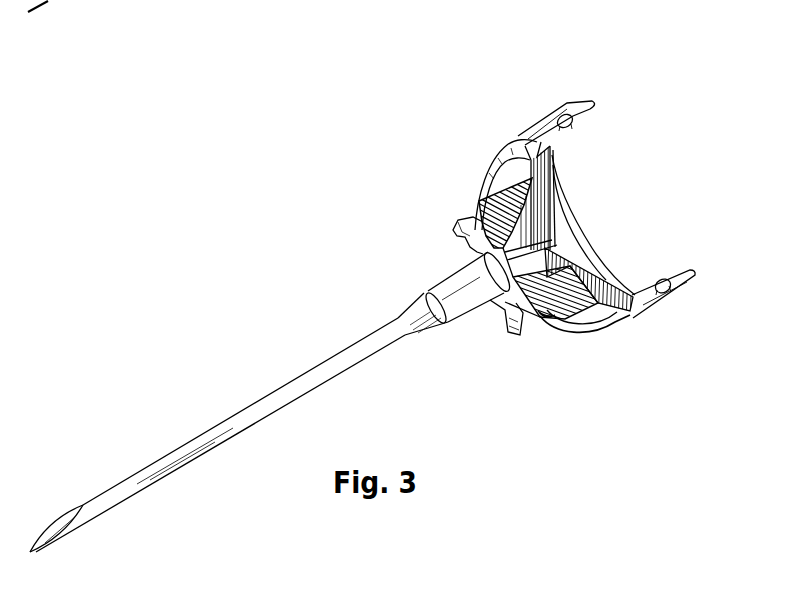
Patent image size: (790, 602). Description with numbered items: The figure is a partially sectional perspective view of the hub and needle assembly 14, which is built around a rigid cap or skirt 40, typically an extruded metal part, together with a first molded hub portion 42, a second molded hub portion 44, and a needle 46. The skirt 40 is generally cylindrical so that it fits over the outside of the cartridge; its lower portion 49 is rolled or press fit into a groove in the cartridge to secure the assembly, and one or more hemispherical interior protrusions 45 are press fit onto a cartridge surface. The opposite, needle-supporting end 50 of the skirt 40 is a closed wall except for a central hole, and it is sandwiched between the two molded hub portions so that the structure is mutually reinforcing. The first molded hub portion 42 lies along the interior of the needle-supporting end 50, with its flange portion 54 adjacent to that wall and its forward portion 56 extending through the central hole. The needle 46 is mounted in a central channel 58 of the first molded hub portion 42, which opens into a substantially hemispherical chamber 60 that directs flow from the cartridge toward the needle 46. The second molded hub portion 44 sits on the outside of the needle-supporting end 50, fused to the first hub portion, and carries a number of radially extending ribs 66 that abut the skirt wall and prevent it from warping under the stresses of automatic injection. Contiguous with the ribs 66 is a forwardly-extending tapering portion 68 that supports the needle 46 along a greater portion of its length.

The hub and needle assembly 14 is at (556, 85).
The skirt 40 is at (586, 103).
The first molded hub portion 42 is at (568, 312).
The second molded hub portion 44 is at (508, 306).
The hemispherical interior protrusions 45 is at (576, 124).
The needle 46 is at (212, 437).
The lower portion of the skirt 49 is at (696, 284).
The needle-supporting end of the skirt 50 is at (508, 173).
The flange portion 54 is at (628, 290).
The forward portion 56 is at (500, 196).
The central channel 58 is at (551, 242).
The chamber 60 is at (572, 235).
The radially extending ribs 66 is at (474, 215).
The forwardly-extending tapering portion 68 is at (440, 290).